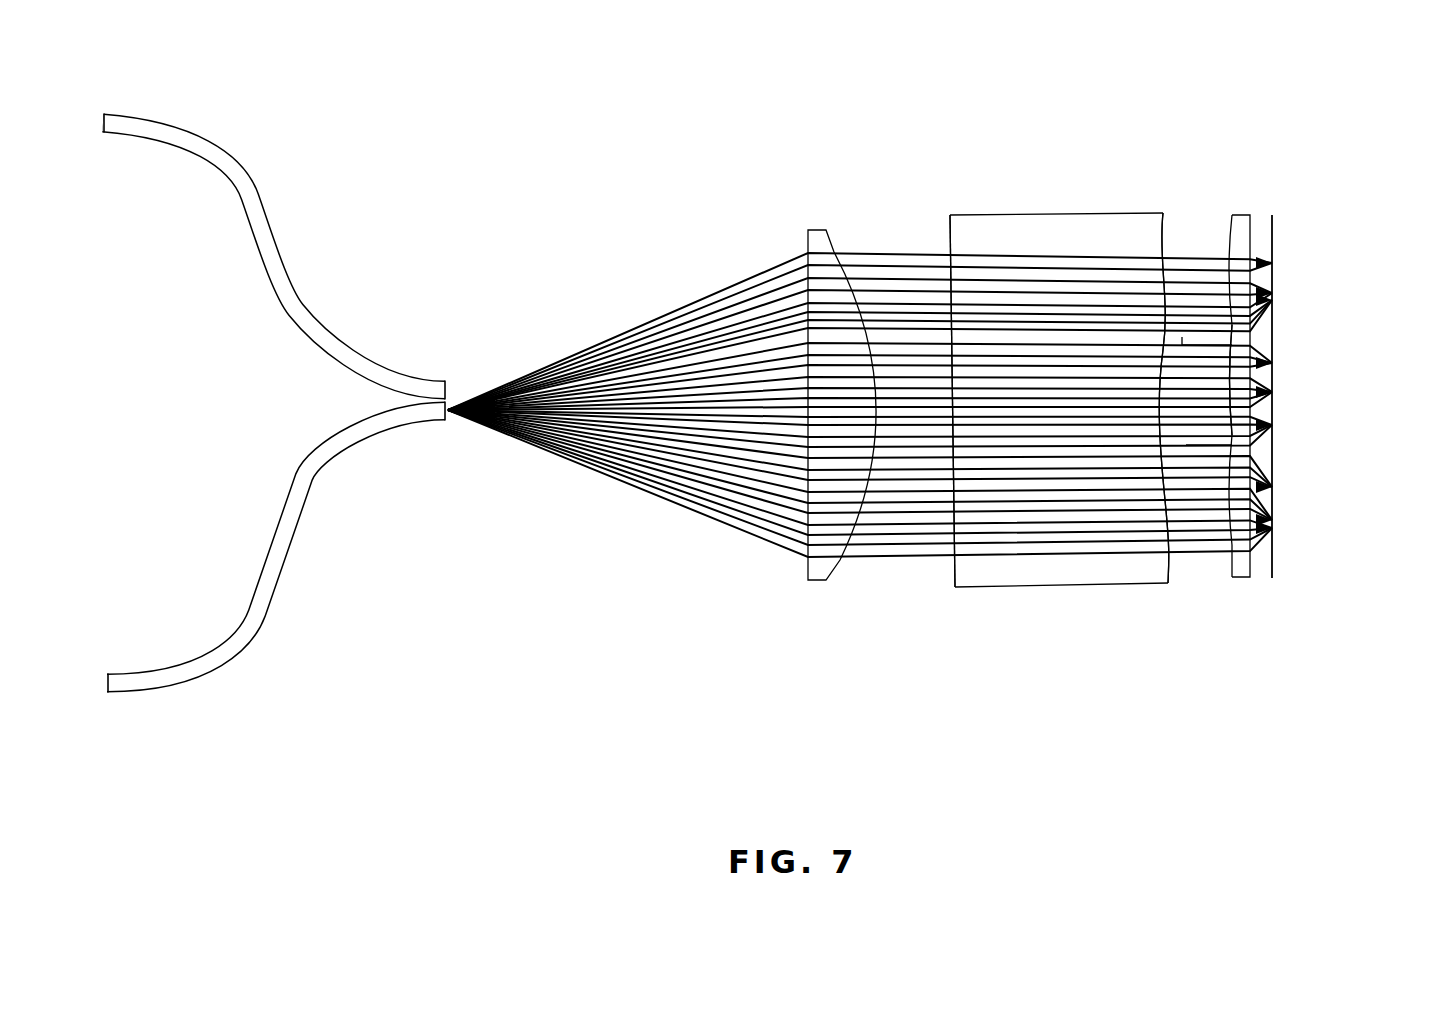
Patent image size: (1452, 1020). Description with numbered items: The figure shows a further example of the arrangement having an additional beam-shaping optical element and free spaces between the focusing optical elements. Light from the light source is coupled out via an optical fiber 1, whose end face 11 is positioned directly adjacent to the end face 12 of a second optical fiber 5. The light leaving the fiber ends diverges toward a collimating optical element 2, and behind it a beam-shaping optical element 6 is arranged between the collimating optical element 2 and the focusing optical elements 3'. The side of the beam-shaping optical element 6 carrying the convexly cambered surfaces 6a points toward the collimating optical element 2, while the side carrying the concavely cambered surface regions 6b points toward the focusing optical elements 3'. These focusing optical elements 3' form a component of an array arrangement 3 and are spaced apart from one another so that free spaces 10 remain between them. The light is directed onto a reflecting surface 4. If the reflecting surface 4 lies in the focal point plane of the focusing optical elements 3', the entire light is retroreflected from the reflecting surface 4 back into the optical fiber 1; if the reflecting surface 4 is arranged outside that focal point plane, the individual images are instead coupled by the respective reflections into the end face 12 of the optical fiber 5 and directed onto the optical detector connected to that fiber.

The optical fiber 1 is at (263, 563).
The optical fiber 5 is at (262, 208).
The end face 11 is at (448, 425).
The end face 12 is at (455, 382).
The collimating optical element 2 is at (800, 240).
The beam-shaping optical element 6 is at (1037, 210).
The convexly cambered surfaces 6a is at (952, 573).
The concavely cambered surface regions 6b is at (1160, 557).
The array arrangement 3 is at (1161, 334).
The focusing optical elements 3' is at (1306, 374).
The free spaces 10 is at (1236, 330).
The reflecting surface 4 is at (1277, 558).